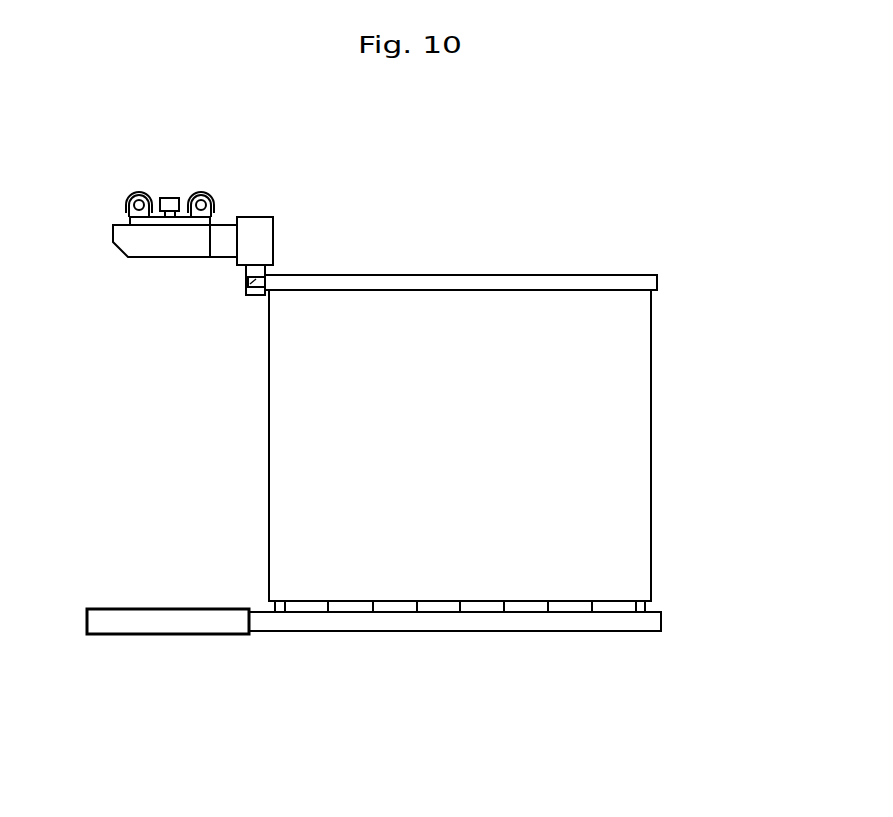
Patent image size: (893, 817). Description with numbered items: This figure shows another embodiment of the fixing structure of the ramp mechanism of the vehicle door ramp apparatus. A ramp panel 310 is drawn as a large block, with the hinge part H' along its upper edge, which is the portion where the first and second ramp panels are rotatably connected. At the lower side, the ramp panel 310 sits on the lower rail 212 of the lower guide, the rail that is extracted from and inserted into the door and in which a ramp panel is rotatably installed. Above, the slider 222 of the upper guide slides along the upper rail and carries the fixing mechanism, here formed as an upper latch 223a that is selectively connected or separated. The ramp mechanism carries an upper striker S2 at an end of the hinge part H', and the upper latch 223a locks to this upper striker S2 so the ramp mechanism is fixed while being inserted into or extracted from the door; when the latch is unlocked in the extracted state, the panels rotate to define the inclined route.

The ramp panel 310 is at (638, 431).
The hinge part H' is at (461, 234).
The lower support block row H is at (460, 661).
The lower rail 212 is at (388, 623).
The slider 222 is at (140, 245).
The upper latch 223a is at (260, 225).
The upper striker S2 is at (252, 282).